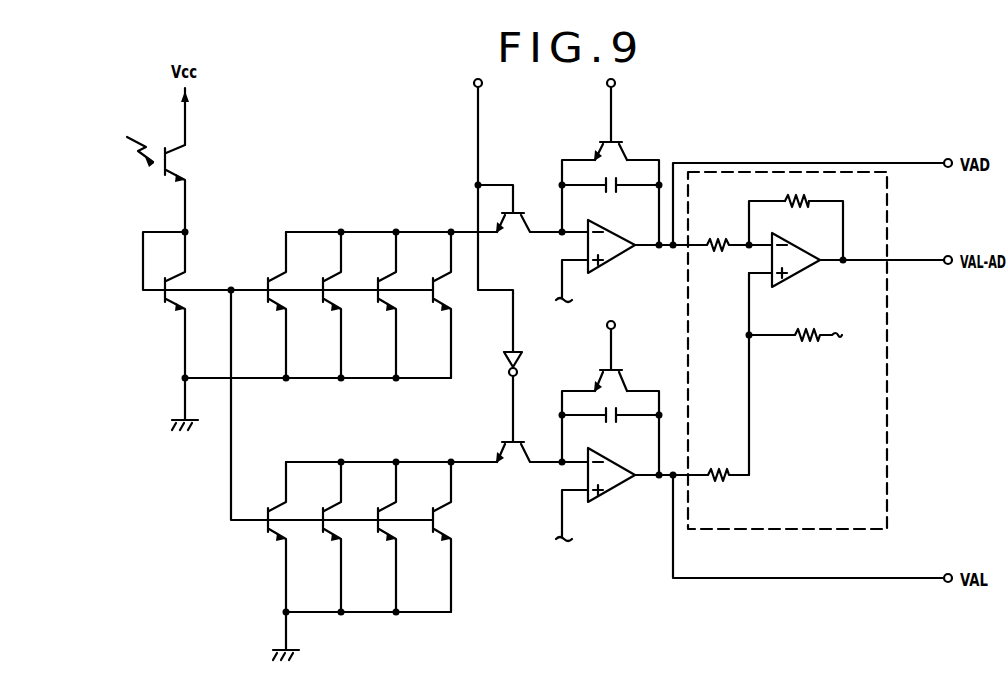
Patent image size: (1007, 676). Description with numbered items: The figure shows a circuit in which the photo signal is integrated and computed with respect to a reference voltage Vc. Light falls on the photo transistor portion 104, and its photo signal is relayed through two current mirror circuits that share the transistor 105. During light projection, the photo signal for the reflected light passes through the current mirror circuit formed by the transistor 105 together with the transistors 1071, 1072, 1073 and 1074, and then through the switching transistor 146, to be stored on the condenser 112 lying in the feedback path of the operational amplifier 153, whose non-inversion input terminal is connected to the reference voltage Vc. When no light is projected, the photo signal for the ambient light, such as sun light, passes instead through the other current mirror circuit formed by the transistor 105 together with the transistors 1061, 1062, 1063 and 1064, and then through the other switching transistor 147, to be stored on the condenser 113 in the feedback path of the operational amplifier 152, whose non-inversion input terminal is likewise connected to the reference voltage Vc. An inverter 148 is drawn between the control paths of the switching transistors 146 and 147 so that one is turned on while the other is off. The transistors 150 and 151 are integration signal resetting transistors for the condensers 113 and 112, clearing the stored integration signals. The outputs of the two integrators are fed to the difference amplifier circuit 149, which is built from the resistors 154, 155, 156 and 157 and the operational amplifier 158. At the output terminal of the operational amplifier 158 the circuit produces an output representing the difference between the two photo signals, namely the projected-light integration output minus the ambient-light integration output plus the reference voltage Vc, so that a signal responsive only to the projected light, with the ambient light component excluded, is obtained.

The photo transistor portion 104 is at (163, 178).
The transistor 105 is at (165, 303).
The transistor 1061 is at (273, 303).
The transistor 1062 is at (328, 303).
The transistor 1063 is at (383, 303).
The transistor 1064 is at (438, 303).
The transistor 1071 is at (273, 533).
The transistor 1072 is at (328, 533).
The transistor 1073 is at (383, 533).
The transistor 1074 is at (438, 533).
The switching transistor 147 is at (510, 225).
The inverter 148 is at (505, 360).
The switching transistor 146 is at (510, 455).
The integration signal resetting transistor 150 is at (620, 137).
The integration signal resetting transistor 151 is at (617, 362).
The condenser 113 is at (612, 195).
The condenser 112 is at (612, 425).
The operational amplifier 152 is at (615, 265).
The operational amplifier 153 is at (613, 495).
The difference amplifier circuit 149 is at (887, 510).
The resistor 154 is at (718, 483).
The resistor 155 is at (800, 344).
The resistor 156 is at (714, 253).
The resistor 157 is at (797, 210).
The operational amplifier 158 is at (797, 275).